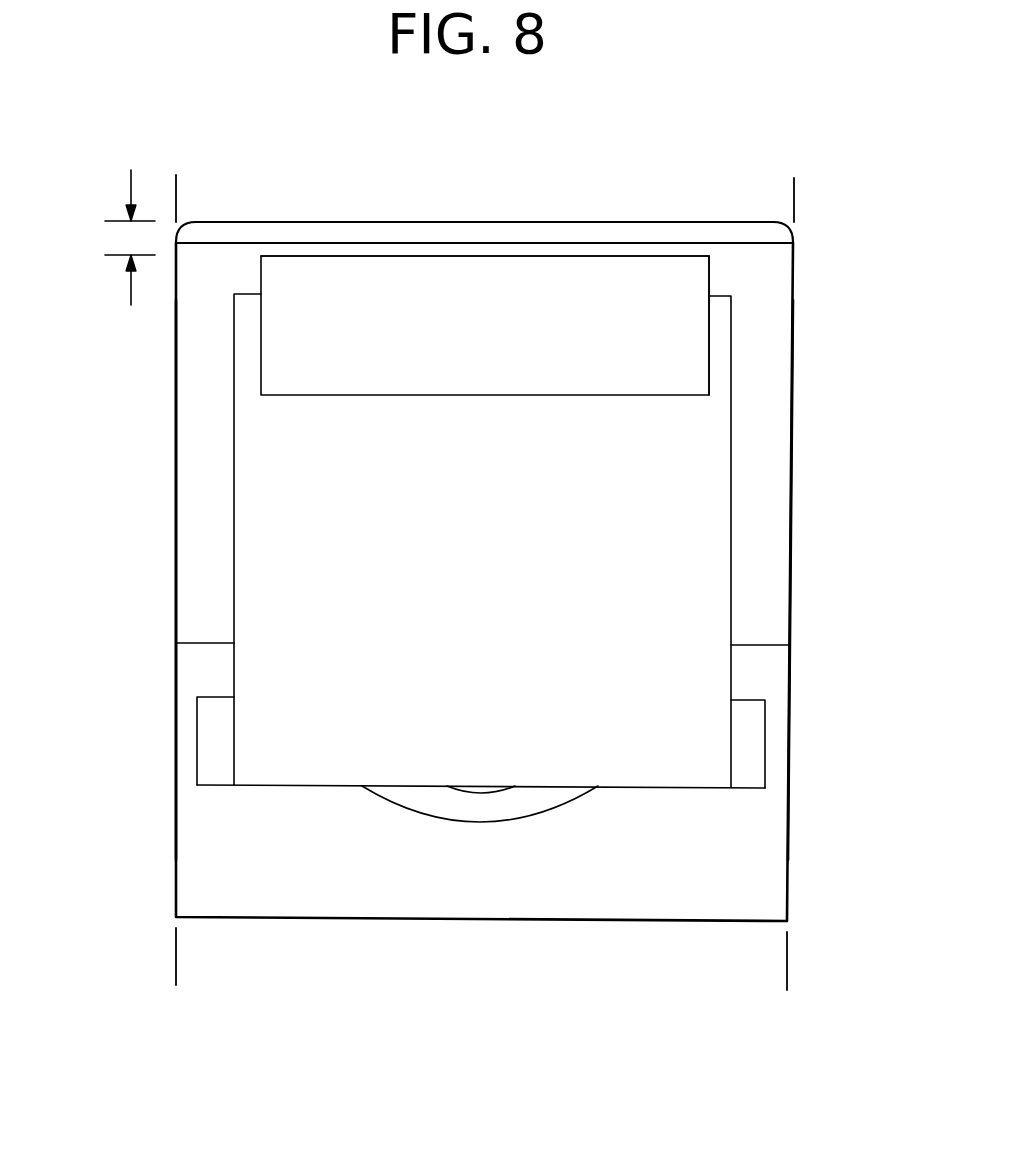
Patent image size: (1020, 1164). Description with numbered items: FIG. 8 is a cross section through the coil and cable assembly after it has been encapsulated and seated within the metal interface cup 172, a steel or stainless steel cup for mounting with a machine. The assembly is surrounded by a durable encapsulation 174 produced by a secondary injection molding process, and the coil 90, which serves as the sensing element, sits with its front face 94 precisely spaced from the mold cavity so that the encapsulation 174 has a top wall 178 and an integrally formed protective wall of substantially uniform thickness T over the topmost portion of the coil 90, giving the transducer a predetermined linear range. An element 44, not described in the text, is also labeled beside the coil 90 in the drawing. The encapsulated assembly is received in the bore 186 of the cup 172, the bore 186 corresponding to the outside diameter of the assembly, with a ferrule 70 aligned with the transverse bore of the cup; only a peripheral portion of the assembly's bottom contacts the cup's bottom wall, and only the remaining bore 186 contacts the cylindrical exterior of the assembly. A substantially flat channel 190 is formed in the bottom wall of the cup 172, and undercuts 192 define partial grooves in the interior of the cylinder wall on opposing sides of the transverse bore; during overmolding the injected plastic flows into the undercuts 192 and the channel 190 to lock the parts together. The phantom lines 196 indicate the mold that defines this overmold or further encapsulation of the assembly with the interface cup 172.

The membrane 44 is at (697, 355).
The ferrule 70 is at (688, 460).
The coil 90 is at (683, 280).
The front face 94 is at (341, 256).
The metal interface cup 172 is at (740, 885).
The encapsulation 174 is at (763, 545).
The top wall 178 is at (657, 222).
The bore 186 is at (727, 667).
The channel 190 is at (462, 803).
The undercut 192 is at (200, 760).
The phantom lines 196 is at (794, 204).
The thickness T is at (115, 243).